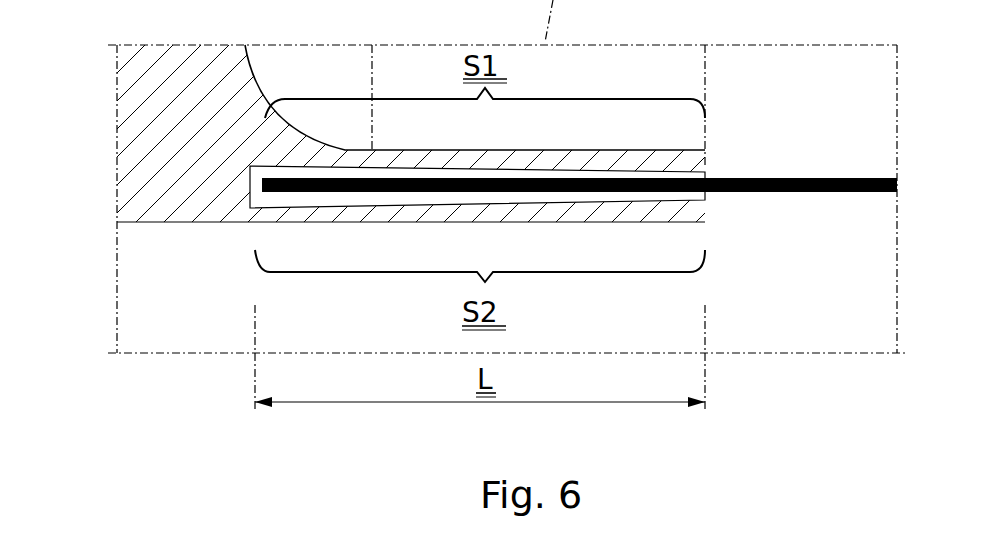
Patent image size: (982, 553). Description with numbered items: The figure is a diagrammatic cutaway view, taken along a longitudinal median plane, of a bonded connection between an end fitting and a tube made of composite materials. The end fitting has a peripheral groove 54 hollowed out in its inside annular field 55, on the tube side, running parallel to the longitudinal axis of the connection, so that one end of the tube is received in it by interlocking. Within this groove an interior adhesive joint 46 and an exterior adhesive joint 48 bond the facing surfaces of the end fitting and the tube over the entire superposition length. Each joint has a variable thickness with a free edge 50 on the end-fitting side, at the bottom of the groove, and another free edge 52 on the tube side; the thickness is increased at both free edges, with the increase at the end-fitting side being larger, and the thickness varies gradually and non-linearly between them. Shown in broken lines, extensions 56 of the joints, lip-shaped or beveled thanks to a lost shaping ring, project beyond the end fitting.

The interior adhesive joint 46 is at (697, 168).
The exterior adhesive joint 48 is at (703, 212).
The free edge on the end-fitting side 50 is at (250, 188).
The free edge on the tube side 52 is at (712, 172).
The peripheral groove 54 is at (347, 198).
The inside annular field 55 is at (708, 205).
The extensions 56 is at (718, 178).